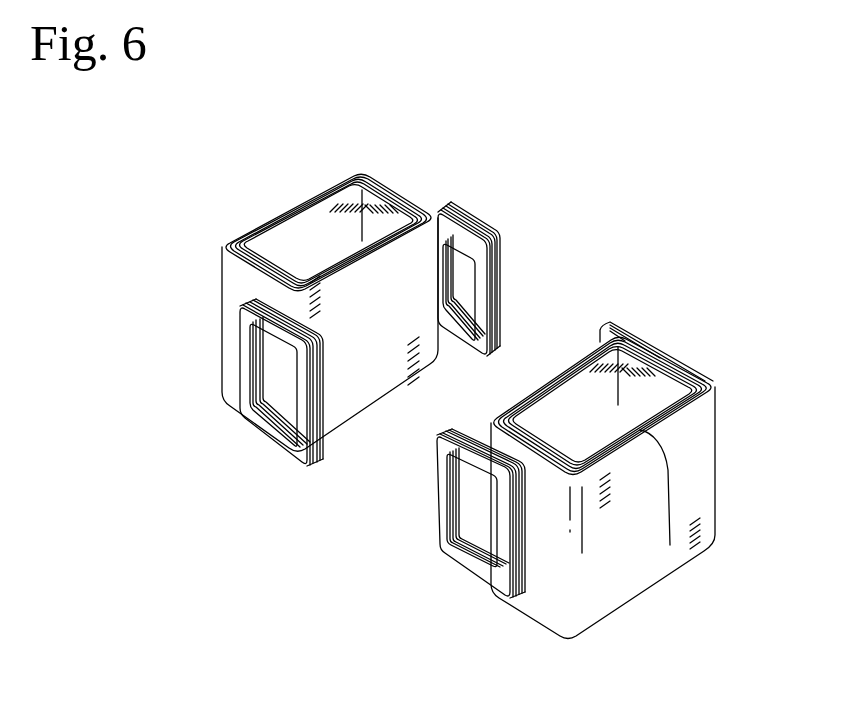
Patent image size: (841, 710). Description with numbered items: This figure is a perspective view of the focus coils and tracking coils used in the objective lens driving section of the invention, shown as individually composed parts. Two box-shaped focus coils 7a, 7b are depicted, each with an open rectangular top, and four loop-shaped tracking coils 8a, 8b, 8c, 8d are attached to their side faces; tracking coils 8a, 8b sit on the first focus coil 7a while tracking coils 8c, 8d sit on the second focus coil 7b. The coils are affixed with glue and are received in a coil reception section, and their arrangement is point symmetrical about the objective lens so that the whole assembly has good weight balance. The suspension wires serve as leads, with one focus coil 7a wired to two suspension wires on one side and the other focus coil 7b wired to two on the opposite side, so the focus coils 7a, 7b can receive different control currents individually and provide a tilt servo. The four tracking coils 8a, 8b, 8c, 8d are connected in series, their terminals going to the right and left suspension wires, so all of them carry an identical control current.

The focus coil 7a is at (270, 218).
The focus coil 7b is at (671, 548).
The tracking coil 8a is at (272, 430).
The tracking coil 8b is at (498, 277).
The tracking coil 8c is at (472, 563).
The tracking coil 8d is at (638, 333).